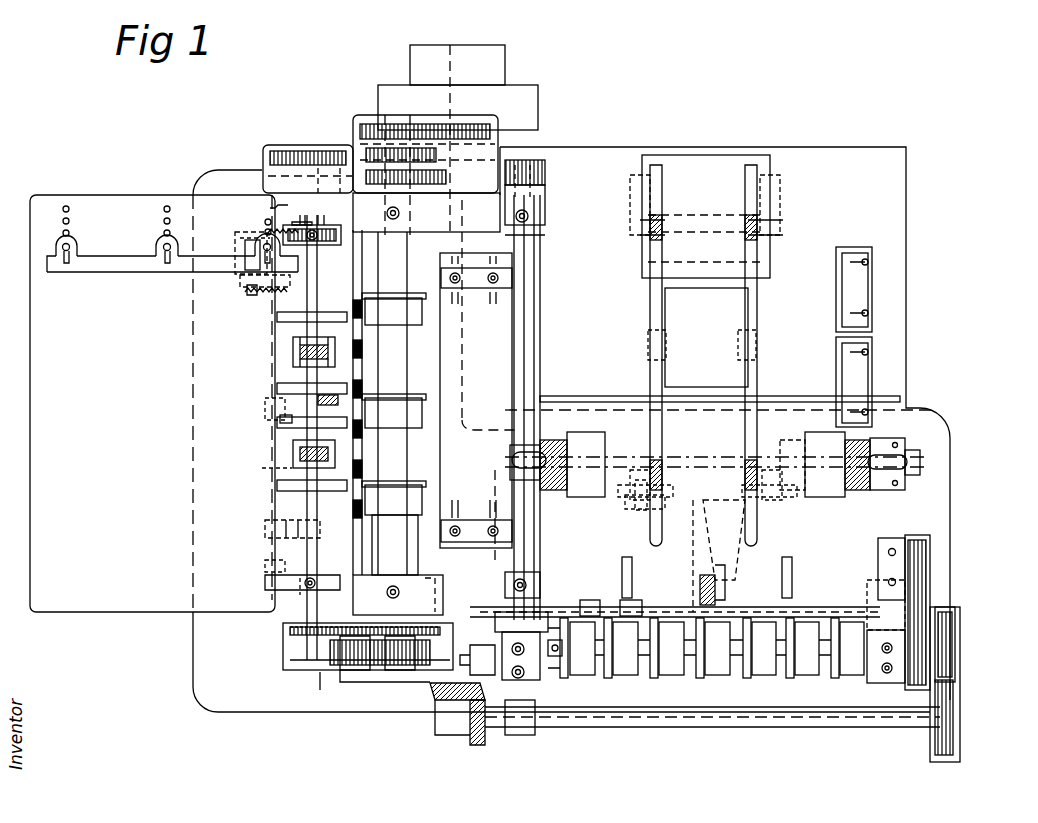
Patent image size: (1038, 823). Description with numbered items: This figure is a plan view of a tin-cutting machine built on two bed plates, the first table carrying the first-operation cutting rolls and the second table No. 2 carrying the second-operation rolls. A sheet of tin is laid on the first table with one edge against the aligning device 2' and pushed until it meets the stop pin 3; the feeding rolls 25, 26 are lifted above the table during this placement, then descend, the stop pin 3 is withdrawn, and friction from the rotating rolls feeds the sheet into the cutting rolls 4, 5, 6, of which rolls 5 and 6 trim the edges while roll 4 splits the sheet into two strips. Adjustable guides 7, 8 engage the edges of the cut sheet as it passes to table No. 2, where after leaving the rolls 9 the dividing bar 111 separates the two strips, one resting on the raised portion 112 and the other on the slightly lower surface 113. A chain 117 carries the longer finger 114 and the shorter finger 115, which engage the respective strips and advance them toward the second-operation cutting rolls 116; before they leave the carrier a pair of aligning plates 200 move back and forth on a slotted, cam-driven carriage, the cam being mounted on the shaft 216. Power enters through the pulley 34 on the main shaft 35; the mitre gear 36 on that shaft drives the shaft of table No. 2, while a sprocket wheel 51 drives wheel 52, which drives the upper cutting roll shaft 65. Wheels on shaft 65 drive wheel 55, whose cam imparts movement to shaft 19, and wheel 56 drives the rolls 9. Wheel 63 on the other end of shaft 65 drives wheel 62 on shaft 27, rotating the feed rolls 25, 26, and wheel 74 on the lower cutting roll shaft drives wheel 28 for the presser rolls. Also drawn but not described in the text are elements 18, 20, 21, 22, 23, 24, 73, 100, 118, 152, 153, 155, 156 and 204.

The table No. 2 is at (571, 429).
The aligning device 2' is at (164, 403).
The stop pin 3 is at (318, 402).
The cutting roll 4 is at (400, 398).
The cutting roll 5 is at (395, 292).
The cutting roll 6 is at (400, 487).
The adjustable guide 7 is at (484, 300).
The adjustable guide 8 is at (485, 515).
The rolls 9 is at (525, 282).
The collar 18 is at (268, 412).
The shaft 19 is at (265, 476).
The bracket 20 is at (232, 238).
The spring 21 is at (245, 300).
The rack gear 22 is at (296, 228).
The shaft bearing 23 is at (322, 252).
The gear housing 24 is at (335, 150).
The feeding roll 25 is at (293, 355).
The feeding roll 26 is at (293, 453).
The shaft 27 is at (312, 512).
The wheel 28 is at (440, 690).
The pulley 34 is at (538, 107).
The main shaft 35 is at (465, 425).
The mitre gear 36 is at (465, 700).
The sprocket wheel 51 is at (500, 140).
The wheel 52 is at (365, 125).
The wheel 55 is at (322, 152).
The wheel 56 is at (460, 130).
The wheel 62 is at (292, 638).
The wheel 63 is at (360, 665).
The shaft 65 is at (390, 551).
The bearing block 73 is at (545, 160).
The wheel 74 is at (410, 665).
The feed table 100 is at (609, 321).
The dividing bar 111 is at (638, 395).
The raised portion 112 is at (706, 337).
The surface 113 is at (707, 433).
The finger 114 is at (757, 290).
The finger 115 is at (755, 408).
The second operation cutting rolls 116 is at (632, 676).
The chain 117 is at (757, 366).
The chute 118 is at (705, 580).
The rack 152 is at (955, 742).
The pinion 153 is at (950, 665).
The bracket 155 is at (905, 556).
The rack bar 156 is at (930, 615).
The aligning plate 200 is at (585, 497).
The bearing bracket 204 is at (895, 460).
The shaft 216 is at (625, 460).